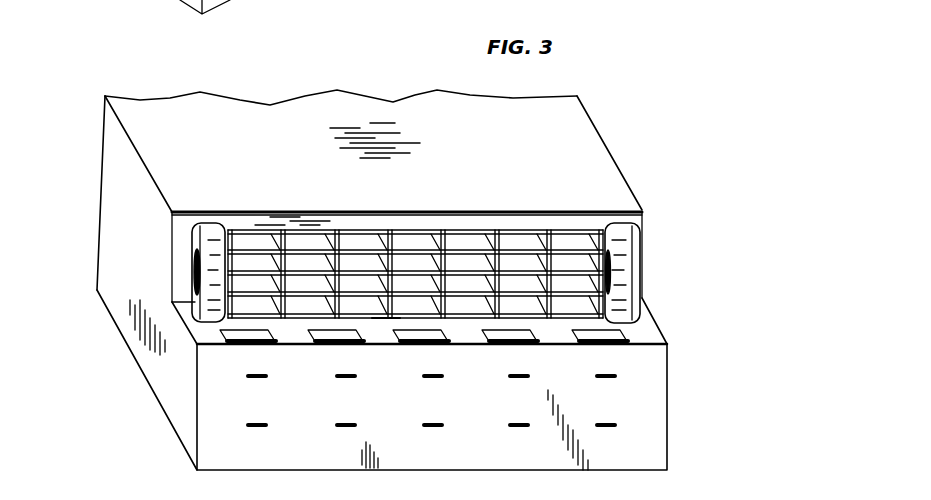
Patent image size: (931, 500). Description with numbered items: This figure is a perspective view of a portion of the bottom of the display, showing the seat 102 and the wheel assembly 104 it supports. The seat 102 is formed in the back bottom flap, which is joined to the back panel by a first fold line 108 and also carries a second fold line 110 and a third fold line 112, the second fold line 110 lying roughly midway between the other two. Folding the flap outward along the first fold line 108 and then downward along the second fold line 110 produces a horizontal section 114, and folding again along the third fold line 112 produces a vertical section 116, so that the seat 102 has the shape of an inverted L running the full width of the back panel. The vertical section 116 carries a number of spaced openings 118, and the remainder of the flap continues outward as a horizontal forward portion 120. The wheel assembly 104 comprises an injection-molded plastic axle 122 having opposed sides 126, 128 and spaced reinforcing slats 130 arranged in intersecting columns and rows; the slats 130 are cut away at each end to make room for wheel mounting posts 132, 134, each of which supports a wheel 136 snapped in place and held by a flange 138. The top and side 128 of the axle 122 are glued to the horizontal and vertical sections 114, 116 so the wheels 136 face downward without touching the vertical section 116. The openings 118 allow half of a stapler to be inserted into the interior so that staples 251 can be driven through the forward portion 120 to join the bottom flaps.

The seat 102 is at (432, 266).
The wheel assembly 104 is at (330, 128).
The first fold line 108 is at (182, 210).
The second fold line 110 is at (640, 293).
The third fold line 112 is at (670, 357).
The horizontal section 114 is at (618, 217).
The vertical section 116 is at (662, 327).
The openings 118 is at (308, 345).
The forward portion 120 is at (223, 405).
The axle 122 is at (444, 198).
The side 126 is at (387, 222).
The side 128 is at (372, 320).
The reinforcing slats 130 is at (470, 262).
The wheel mounting post 132 is at (257, 278).
The wheel mounting post 134 is at (522, 270).
The wheel 136 is at (192, 243).
The flange 138 is at (193, 272).
The staples 251 is at (340, 427).